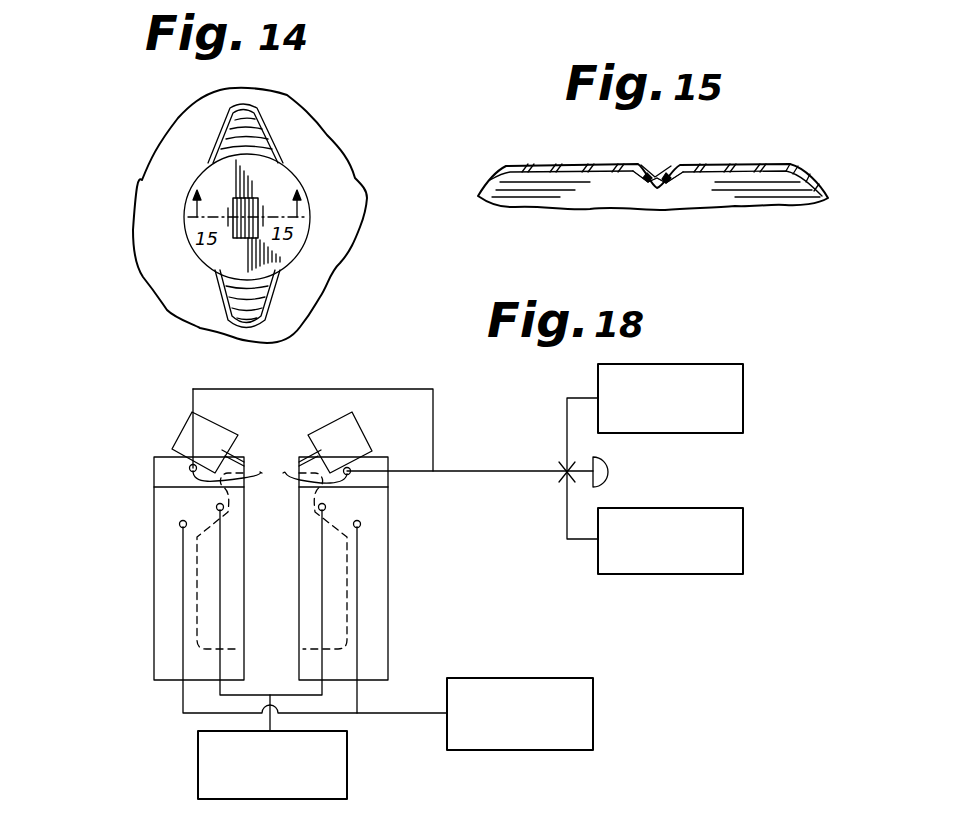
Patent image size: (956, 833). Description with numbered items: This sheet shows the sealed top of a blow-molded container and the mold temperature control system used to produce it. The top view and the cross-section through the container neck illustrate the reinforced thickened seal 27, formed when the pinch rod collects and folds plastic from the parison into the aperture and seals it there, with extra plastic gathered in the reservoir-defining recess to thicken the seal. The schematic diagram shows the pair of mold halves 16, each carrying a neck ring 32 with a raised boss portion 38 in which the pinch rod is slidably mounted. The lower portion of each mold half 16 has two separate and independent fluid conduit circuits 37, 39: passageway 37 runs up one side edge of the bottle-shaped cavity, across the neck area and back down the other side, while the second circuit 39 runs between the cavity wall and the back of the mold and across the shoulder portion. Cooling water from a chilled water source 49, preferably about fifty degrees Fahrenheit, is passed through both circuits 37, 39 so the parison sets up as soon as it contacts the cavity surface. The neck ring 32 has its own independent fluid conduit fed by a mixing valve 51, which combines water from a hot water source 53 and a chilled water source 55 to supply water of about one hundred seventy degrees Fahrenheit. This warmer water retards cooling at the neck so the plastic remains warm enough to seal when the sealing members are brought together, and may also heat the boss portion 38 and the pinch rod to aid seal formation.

In FIG. 18, the mold halves 16 is at (163, 598).
In FIG. 14, the reinforced thickened seal 27 is at (250, 206).
In FIG. 15, the reinforced thickened seal 27 is at (656, 166).
In FIG. 18, the neck ring 32 is at (157, 468).
In FIG. 18, the fluid conduit circuit 37 is at (322, 532).
In FIG. 18, the raised boss portion 38 is at (210, 417).
In FIG. 18, the second fluid circuit 39 is at (357, 572).
In FIG. 18, the chilled water source 49 is at (347, 739).
In FIG. 18, the mixing valve 51 is at (630, 447).
In FIG. 18, the hot water source 53 is at (744, 390).
In FIG. 18, the chilled water source 55 is at (744, 535).